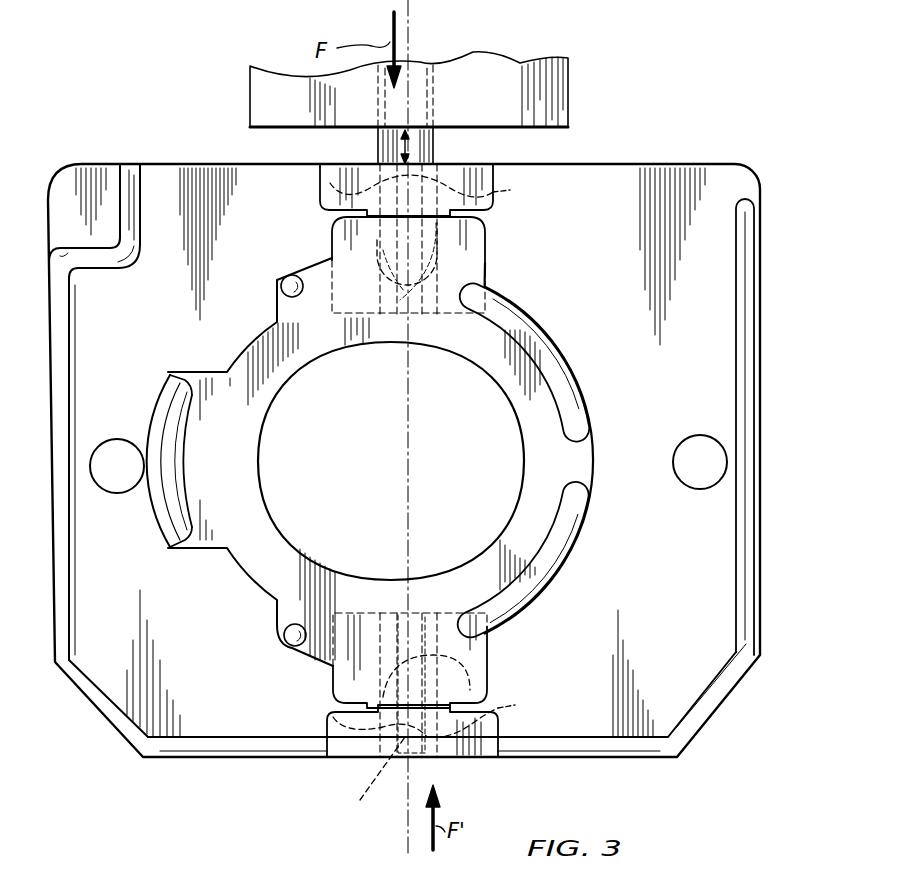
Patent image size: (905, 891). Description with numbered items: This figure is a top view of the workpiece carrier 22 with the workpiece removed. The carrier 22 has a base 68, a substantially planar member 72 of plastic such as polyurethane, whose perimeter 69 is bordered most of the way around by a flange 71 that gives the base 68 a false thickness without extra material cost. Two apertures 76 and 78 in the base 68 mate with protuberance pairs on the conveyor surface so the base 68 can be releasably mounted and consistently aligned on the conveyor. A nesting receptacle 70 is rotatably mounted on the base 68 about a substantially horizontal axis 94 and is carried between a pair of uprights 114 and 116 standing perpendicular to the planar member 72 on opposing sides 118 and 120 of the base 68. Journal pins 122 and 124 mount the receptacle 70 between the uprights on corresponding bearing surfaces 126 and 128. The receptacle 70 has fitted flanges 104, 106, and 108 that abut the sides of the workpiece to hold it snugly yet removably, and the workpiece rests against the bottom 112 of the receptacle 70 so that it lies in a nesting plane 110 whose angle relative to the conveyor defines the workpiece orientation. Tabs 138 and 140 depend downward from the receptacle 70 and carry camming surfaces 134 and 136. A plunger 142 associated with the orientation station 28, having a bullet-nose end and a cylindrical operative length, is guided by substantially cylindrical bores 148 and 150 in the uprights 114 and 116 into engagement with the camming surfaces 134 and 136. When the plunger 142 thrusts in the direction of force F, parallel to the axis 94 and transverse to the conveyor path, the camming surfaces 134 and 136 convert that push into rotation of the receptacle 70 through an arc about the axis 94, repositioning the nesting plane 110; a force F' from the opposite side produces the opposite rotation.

The workpiece carrier 22 is at (767, 188).
The orientation station 28 is at (515, 110).
The base 68 is at (685, 638).
The perimeter 69 is at (105, 726).
The nesting receptacle 70 is at (228, 453).
The flange 71 is at (50, 552).
The planar member 72 is at (625, 160).
The aperture 76 is at (128, 446).
The aperture 78 is at (700, 440).
The horizontal axis 94 is at (410, 8).
The fitted flange 104 is at (160, 500).
The fitted flange 106 is at (572, 378).
The fitted flange 108 is at (558, 563).
The nesting plane 110 is at (570, 468).
The bottom 112 is at (275, 561).
The upright 114 is at (325, 195).
The upright 116 is at (335, 750).
The side of base 118 is at (176, 162).
The side of base 120 is at (649, 760).
The pin 122 is at (526, 707).
The pin 124 is at (442, 158).
The bearing surface 126 is at (366, 776).
The bearing surface 128 is at (522, 190).
The camming surface 134 is at (472, 678).
The camming surface 136 is at (376, 240).
The tab 138 is at (333, 676).
The tab 140 is at (487, 243).
The plunger 142 is at (378, 143).
The cylindrical bore 148 is at (328, 183).
The cylindrical bore 150 is at (330, 708).